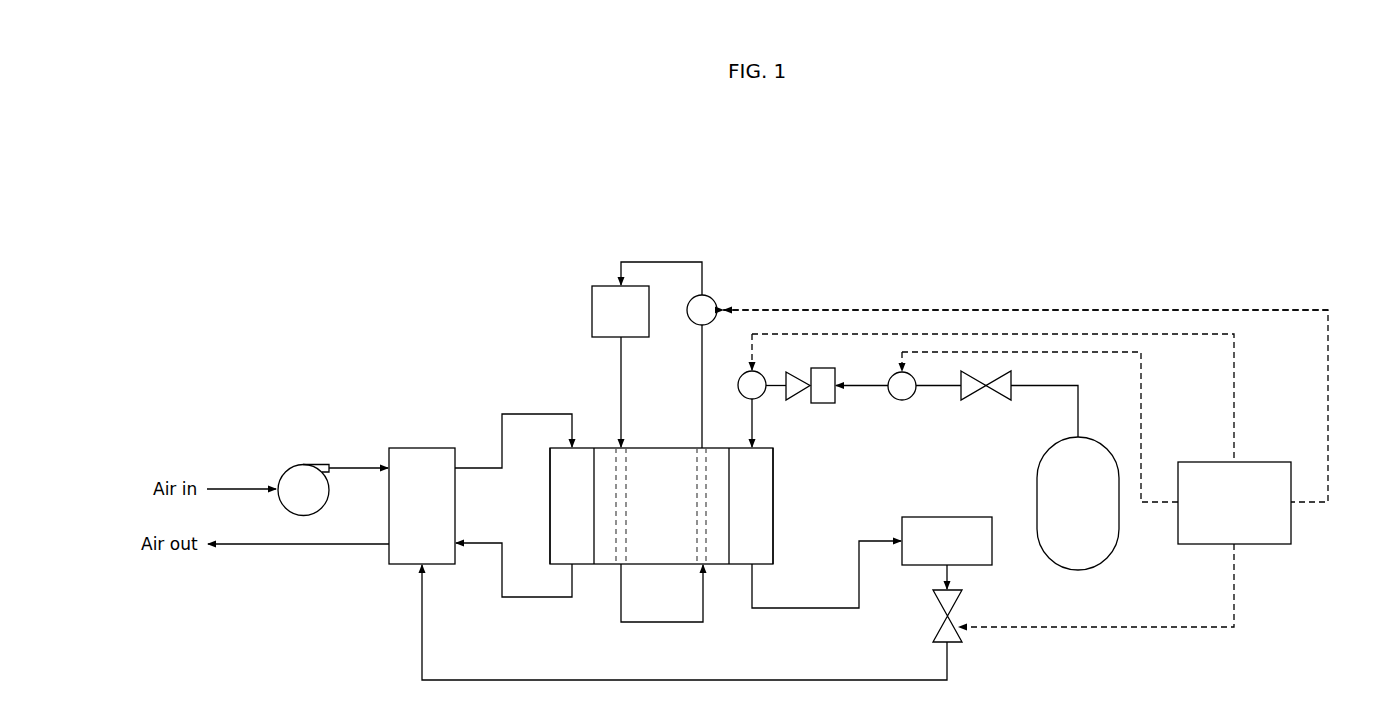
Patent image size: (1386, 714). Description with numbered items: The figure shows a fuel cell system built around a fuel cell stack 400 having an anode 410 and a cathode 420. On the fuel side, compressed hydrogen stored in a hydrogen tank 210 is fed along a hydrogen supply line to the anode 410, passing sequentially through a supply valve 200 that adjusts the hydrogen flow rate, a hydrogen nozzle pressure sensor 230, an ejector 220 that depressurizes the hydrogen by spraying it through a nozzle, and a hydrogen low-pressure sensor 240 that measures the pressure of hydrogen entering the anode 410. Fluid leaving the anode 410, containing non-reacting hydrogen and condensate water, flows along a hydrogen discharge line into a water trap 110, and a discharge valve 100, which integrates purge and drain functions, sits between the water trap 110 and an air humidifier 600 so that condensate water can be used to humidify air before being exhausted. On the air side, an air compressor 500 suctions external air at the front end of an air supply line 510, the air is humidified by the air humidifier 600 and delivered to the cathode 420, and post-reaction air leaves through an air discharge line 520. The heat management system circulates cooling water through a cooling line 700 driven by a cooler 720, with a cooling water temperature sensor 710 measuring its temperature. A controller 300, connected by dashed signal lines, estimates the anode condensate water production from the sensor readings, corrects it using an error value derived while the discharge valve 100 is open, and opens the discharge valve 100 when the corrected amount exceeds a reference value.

The discharge valve 100 is at (957, 600).
The water trap 110 is at (955, 516).
The supply valve 200 is at (997, 395).
The hydrogen tank 210 is at (1107, 560).
The ejector 220 is at (832, 405).
The hydrogen nozzle pressure sensor 230 is at (902, 402).
The hydrogen low-pressure sensor 240 is at (762, 400).
The controller 300 is at (1272, 547).
The fuel cell stack 400 is at (657, 440).
The anode 410 is at (773, 504).
The cathode 420 is at (549, 504).
The air compressor 500 is at (308, 463).
The air supply line 510 is at (536, 413).
The air discharge line 520 is at (537, 599).
The air humidifier 600 is at (432, 447).
The cooling line 700 is at (662, 625).
The cooling water temperature sensor 710 is at (715, 297).
The cooler 720 is at (598, 283).